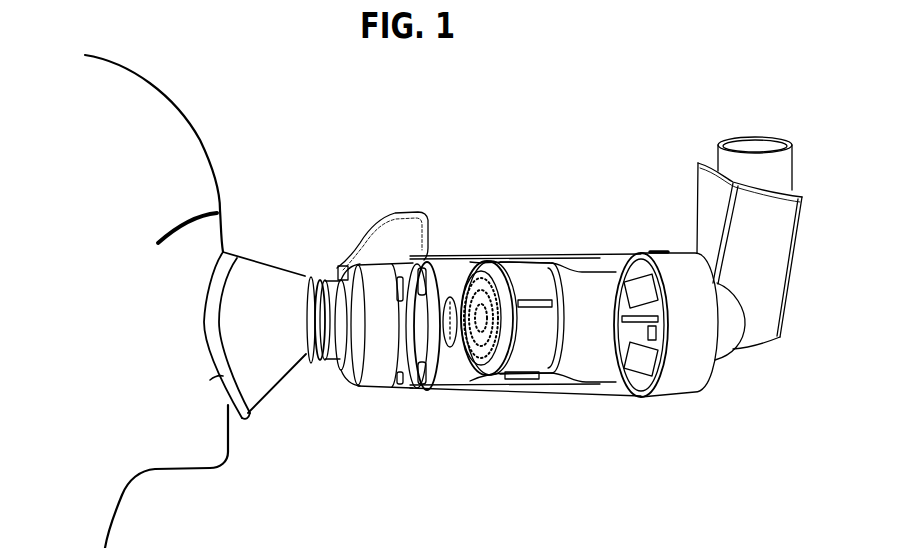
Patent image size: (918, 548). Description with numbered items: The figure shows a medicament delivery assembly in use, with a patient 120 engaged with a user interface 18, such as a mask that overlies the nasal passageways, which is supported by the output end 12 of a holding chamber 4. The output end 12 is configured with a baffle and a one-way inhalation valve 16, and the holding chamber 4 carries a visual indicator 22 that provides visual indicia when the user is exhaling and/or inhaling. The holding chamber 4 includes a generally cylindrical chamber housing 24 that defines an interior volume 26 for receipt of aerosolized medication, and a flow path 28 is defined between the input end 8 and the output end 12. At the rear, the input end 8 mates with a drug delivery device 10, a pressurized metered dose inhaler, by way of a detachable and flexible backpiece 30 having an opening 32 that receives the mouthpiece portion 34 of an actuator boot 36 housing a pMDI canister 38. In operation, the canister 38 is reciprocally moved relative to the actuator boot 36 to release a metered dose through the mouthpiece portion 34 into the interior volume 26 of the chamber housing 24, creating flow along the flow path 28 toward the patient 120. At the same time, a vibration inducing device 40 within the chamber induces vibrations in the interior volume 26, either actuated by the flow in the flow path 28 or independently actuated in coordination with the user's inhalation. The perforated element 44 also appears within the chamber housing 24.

The holding chamber 4 is at (613, 198).
The input end 8 is at (712, 384).
The drug delivery device 10 is at (802, 280).
The output end 12 is at (312, 364).
The one-way inhalation valve 16 is at (385, 394).
The user interface 18 is at (265, 392).
The visual indicator 22 is at (408, 215).
The chamber housing 24 is at (473, 260).
The interior volume 26 is at (605, 352).
The flow path 28 is at (458, 272).
The backpiece 30 is at (684, 255).
The opening 32 is at (650, 324).
The mouthpiece portion 34 is at (727, 340).
The actuator boot 36 is at (775, 232).
The pMDI canister 38 is at (782, 163).
The vibration inducing device 40 is at (531, 272).
The perforated disc / flow indicator 44 is at (492, 286).
The patient 120 is at (195, 163).